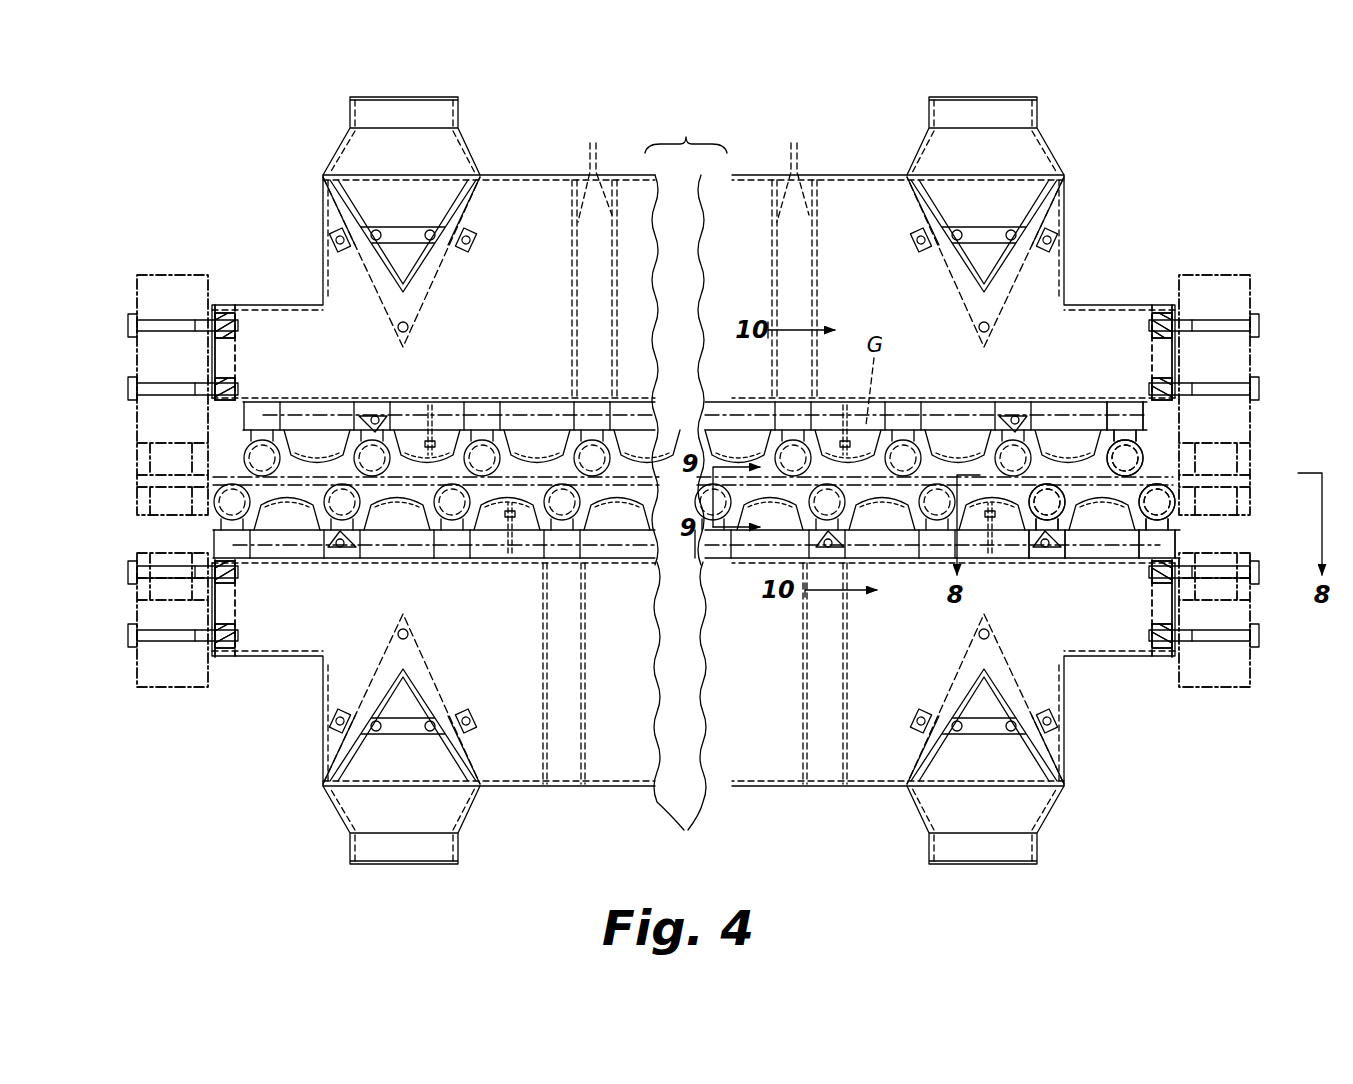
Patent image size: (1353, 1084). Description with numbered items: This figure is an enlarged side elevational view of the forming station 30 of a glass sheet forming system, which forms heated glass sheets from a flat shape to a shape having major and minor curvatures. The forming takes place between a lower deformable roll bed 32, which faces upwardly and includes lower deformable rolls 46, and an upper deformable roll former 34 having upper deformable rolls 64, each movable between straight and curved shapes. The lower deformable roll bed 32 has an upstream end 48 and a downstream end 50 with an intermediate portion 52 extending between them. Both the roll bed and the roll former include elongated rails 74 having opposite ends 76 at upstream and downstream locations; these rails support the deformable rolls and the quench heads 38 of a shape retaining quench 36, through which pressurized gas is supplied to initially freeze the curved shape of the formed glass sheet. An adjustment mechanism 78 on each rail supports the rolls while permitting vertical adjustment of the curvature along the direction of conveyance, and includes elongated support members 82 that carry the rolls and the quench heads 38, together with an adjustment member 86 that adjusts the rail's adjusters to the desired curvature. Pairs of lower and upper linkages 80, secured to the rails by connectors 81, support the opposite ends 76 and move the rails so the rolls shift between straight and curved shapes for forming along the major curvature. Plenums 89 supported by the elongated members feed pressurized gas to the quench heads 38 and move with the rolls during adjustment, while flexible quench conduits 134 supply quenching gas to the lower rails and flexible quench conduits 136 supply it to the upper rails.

The forming station 30 is at (1216, 112).
The lower deformable roll bed 32 is at (1062, 492).
The upper deformable roll former 34 is at (1153, 452).
The shape retaining quench 36 is at (831, 438).
The quench heads 38 is at (465, 442).
The lower deformable rolls 46 is at (579, 514).
The upstream end 48 is at (216, 498).
The downstream end 50 is at (1205, 712).
The intermediate portion 52 is at (593, 565).
The upper deformable rolls 64 is at (608, 450).
The elongated rails 74 is at (636, 195).
The opposite ends 76 is at (263, 327).
The adjustment mechanism 78 is at (320, 410).
The linkages 80 is at (135, 356).
The connectors 81 is at (180, 392).
The elongated support member 82 is at (520, 446).
The adjustment member 86 is at (572, 228).
The plenums 89 is at (694, 170).
The flexible quench conduits 134 is at (357, 849).
The flexible quench conduits 136 is at (357, 112).